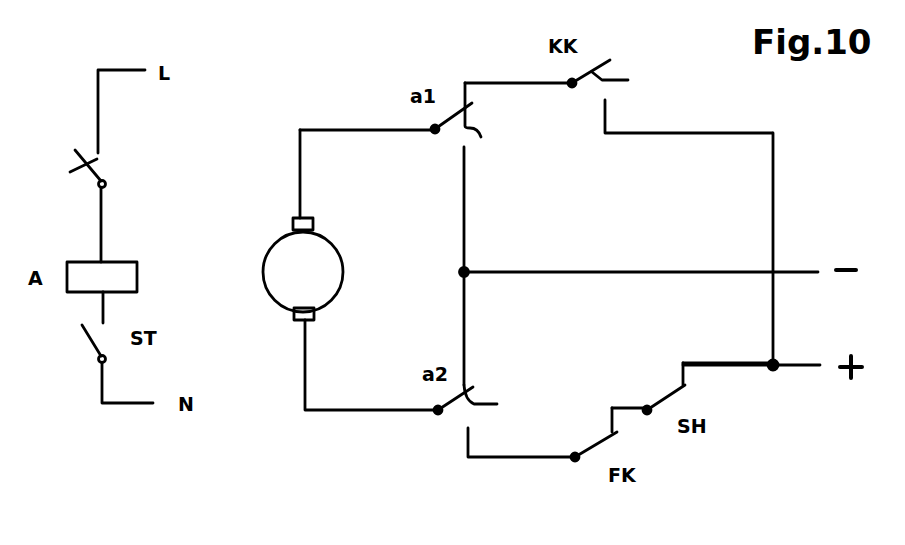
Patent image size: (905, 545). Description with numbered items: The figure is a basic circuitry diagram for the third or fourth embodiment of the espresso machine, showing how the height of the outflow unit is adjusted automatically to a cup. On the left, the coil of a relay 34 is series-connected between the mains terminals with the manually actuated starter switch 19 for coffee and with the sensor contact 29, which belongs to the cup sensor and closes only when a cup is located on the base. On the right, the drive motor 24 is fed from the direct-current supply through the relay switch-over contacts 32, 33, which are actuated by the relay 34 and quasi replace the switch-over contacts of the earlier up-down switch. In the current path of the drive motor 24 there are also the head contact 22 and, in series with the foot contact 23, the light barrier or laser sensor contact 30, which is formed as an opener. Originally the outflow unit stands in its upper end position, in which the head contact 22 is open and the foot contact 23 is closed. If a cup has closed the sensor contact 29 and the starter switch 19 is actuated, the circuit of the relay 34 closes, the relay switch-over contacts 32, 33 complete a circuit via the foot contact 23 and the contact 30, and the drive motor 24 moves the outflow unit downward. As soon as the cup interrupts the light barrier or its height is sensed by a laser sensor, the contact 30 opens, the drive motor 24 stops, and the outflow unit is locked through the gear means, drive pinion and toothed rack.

The starter switch 19 is at (106, 170).
The relay 34 is at (114, 266).
The sensor contact 29 is at (88, 346).
The drive motor 24 is at (262, 275).
The relay switch-over contact 32 is at (413, 121).
The head contact 22 is at (618, 96).
The relay switch-over contact 33 is at (491, 405).
The foot contact 23 is at (578, 460).
The light barrier contact 30 is at (652, 413).